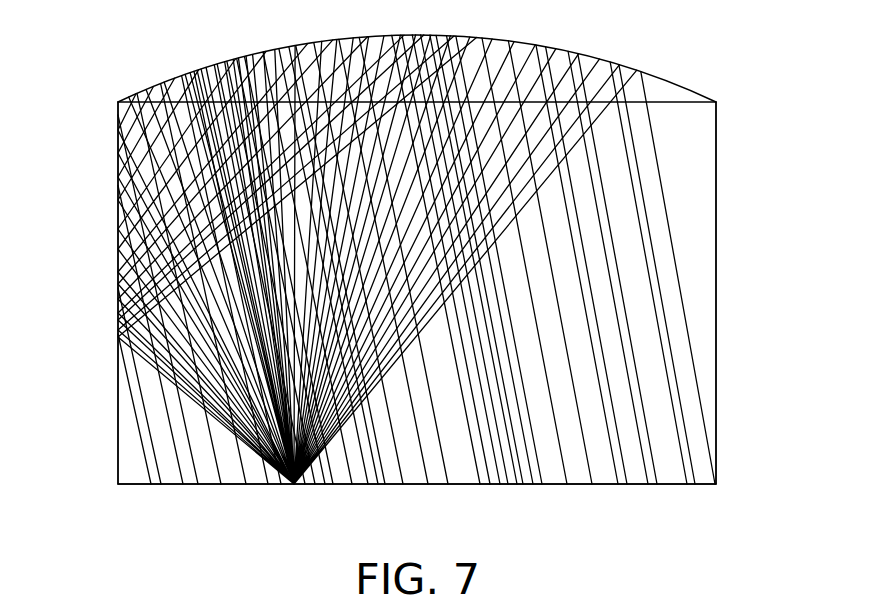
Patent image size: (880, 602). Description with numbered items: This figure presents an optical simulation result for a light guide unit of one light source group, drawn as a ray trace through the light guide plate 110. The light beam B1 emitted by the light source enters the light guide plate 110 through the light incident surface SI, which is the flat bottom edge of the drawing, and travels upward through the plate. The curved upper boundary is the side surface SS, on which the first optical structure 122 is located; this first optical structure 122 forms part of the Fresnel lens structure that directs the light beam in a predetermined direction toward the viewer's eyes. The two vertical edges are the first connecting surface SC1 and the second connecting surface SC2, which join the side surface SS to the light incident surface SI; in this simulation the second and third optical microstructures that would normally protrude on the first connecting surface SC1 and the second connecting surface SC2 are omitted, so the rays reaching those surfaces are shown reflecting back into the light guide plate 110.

The light guide plate 110 is at (697, 193).
The side surface SS is at (673, 90).
The first connecting surface SC1 is at (111, 120).
The second connecting surface SC2 is at (724, 119).
The light incident surface SI is at (211, 497).
The first optical structure 122 is at (625, 71).
The light beam B1 is at (175, 383).